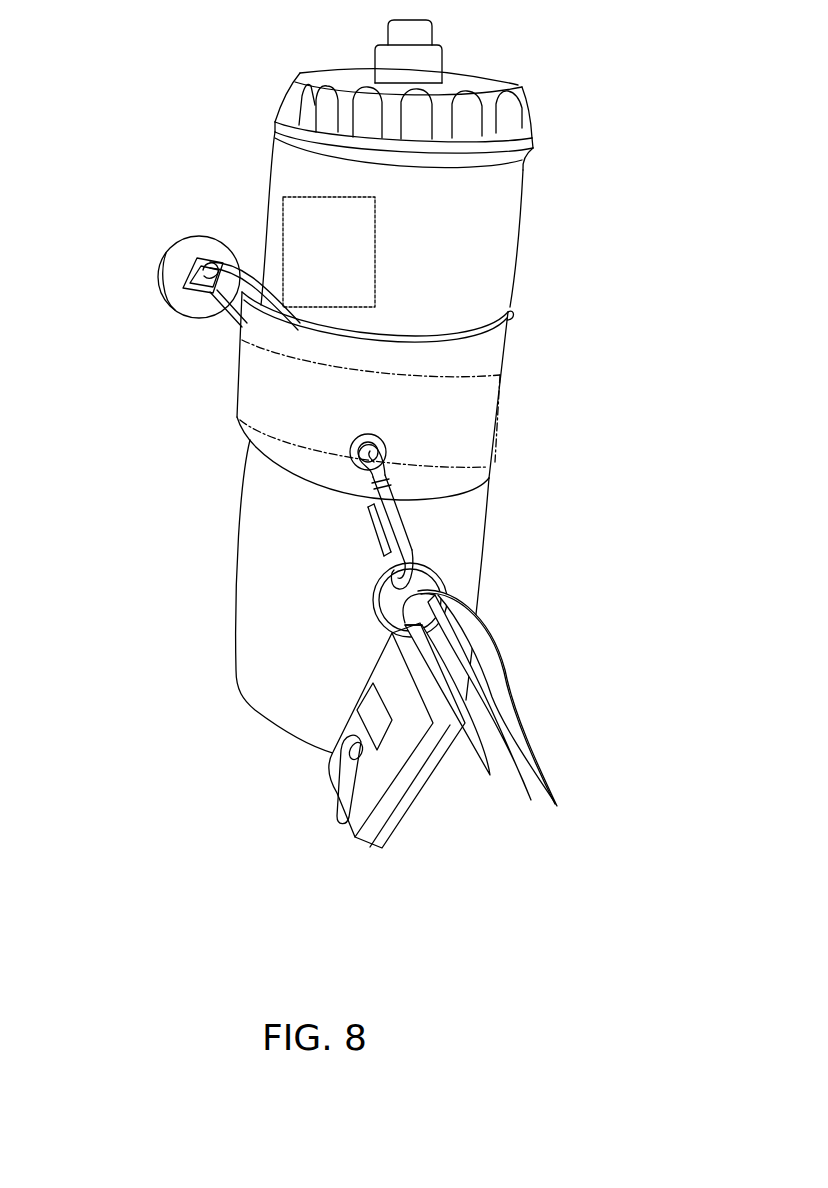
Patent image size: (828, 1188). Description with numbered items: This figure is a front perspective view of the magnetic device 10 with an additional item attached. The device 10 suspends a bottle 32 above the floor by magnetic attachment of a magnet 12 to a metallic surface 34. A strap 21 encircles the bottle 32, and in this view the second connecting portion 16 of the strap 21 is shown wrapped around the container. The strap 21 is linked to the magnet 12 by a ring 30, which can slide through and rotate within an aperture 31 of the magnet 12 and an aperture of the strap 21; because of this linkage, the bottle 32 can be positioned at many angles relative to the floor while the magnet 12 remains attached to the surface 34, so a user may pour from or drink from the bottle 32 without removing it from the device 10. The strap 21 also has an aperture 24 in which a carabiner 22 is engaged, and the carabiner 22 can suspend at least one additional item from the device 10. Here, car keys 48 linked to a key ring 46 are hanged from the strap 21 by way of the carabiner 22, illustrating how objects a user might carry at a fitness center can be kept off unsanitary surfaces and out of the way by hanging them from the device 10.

The magnetic device 10 is at (540, 493).
The magnet 12 is at (185, 252).
The second connecting portion 16 is at (452, 410).
The strap 21 is at (378, 403).
The carabiner 22 is at (380, 517).
The aperture 24 is at (350, 450).
The ring 30 is at (233, 320).
The aperture 31 is at (198, 277).
The bottle 32 is at (377, 264).
The metallic surface 34 is at (179, 229).
The key ring 46 is at (371, 606).
The car keys 48 is at (390, 777).